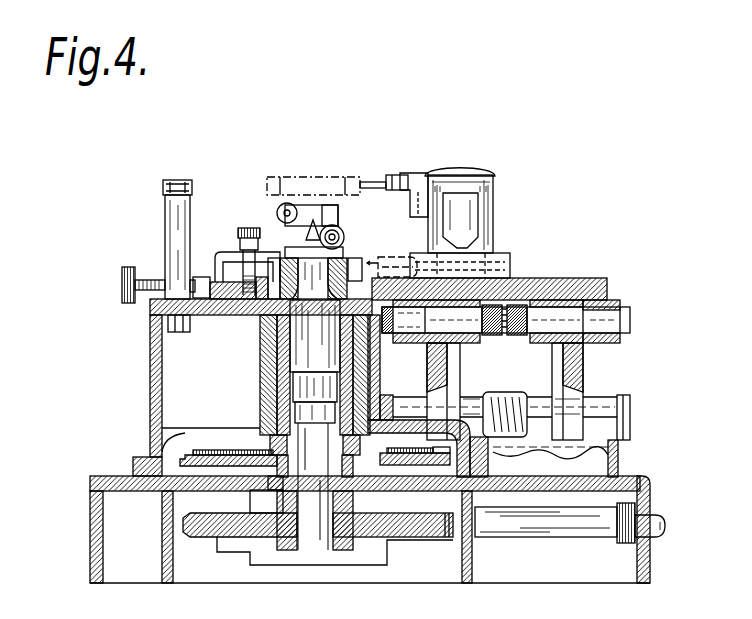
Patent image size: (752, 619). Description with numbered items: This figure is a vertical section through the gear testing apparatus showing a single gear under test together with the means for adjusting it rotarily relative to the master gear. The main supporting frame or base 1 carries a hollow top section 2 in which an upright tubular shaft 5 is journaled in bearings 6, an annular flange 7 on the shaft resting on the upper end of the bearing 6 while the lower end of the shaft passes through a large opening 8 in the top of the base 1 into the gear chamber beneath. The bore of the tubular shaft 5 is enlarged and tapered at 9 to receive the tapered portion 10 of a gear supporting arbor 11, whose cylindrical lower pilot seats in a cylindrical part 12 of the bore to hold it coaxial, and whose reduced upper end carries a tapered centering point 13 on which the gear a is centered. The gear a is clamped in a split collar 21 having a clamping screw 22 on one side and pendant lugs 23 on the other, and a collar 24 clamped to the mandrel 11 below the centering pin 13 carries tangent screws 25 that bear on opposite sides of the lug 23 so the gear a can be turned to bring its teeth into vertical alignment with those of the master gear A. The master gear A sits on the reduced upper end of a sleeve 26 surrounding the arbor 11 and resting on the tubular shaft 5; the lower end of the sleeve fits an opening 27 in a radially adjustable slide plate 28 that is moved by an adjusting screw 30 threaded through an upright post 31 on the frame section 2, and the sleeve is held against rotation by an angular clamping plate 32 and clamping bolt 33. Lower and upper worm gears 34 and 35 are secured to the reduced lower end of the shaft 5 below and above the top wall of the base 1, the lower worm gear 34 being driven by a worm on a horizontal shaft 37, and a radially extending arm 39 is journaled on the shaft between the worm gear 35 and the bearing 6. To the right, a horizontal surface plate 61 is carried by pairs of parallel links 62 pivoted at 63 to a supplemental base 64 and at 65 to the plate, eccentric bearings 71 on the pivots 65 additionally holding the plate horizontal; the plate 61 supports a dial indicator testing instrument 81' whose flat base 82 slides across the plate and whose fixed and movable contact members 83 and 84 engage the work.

The main supporting frame or base 1 is at (90, 490).
The hollow top section 2 is at (150, 423).
The upright tubular shaft 5 is at (283, 368).
The bearings 6 is at (268, 345).
The annular enlargement or flange 7 is at (262, 303).
The opening 8 is at (264, 490).
The enlarged tapered end of bore 9 is at (345, 350).
The tapered portion 10 is at (303, 350).
The gear supporting arbor 11 is at (322, 388).
The cylindrical part of bore 12 is at (300, 412).
The tapered centering point 13 is at (309, 229).
The split collar 21 is at (316, 205).
The clamping screw 22 is at (285, 203).
The pendant lugs 23 is at (334, 225).
The collar 24 is at (343, 253).
The tangent screws 25 is at (345, 238).
The sleeve 26 is at (331, 294).
The opening 27 is at (273, 285).
The radially adjustable slide plate 28 is at (227, 300).
The adjusting screw 30 is at (128, 267).
The upright post 31 is at (165, 214).
The angular clamping plate 32 is at (216, 256).
The clamping bolt 33 is at (249, 228).
The lower worm gear 34 is at (433, 537).
The upper worm gear 35 is at (196, 455).
The horizontal shaft 37 is at (558, 528).
The radially extending arm 39 is at (268, 441).
The horizontal surface plate 61 is at (566, 280).
The parallel links 62 is at (440, 370).
The pivots 63 is at (630, 415).
The supplemental base 64 is at (612, 452).
The pivots 65 is at (630, 320).
The eccentric bearings 71 is at (431, 347).
The testing instrument 81' is at (481, 202).
The flat base 82 is at (510, 264).
The fixed contact member 83 is at (392, 276).
The movable contact member 84 is at (370, 182).
The master gear A is at (356, 272).
The gear under test a is at (298, 177).